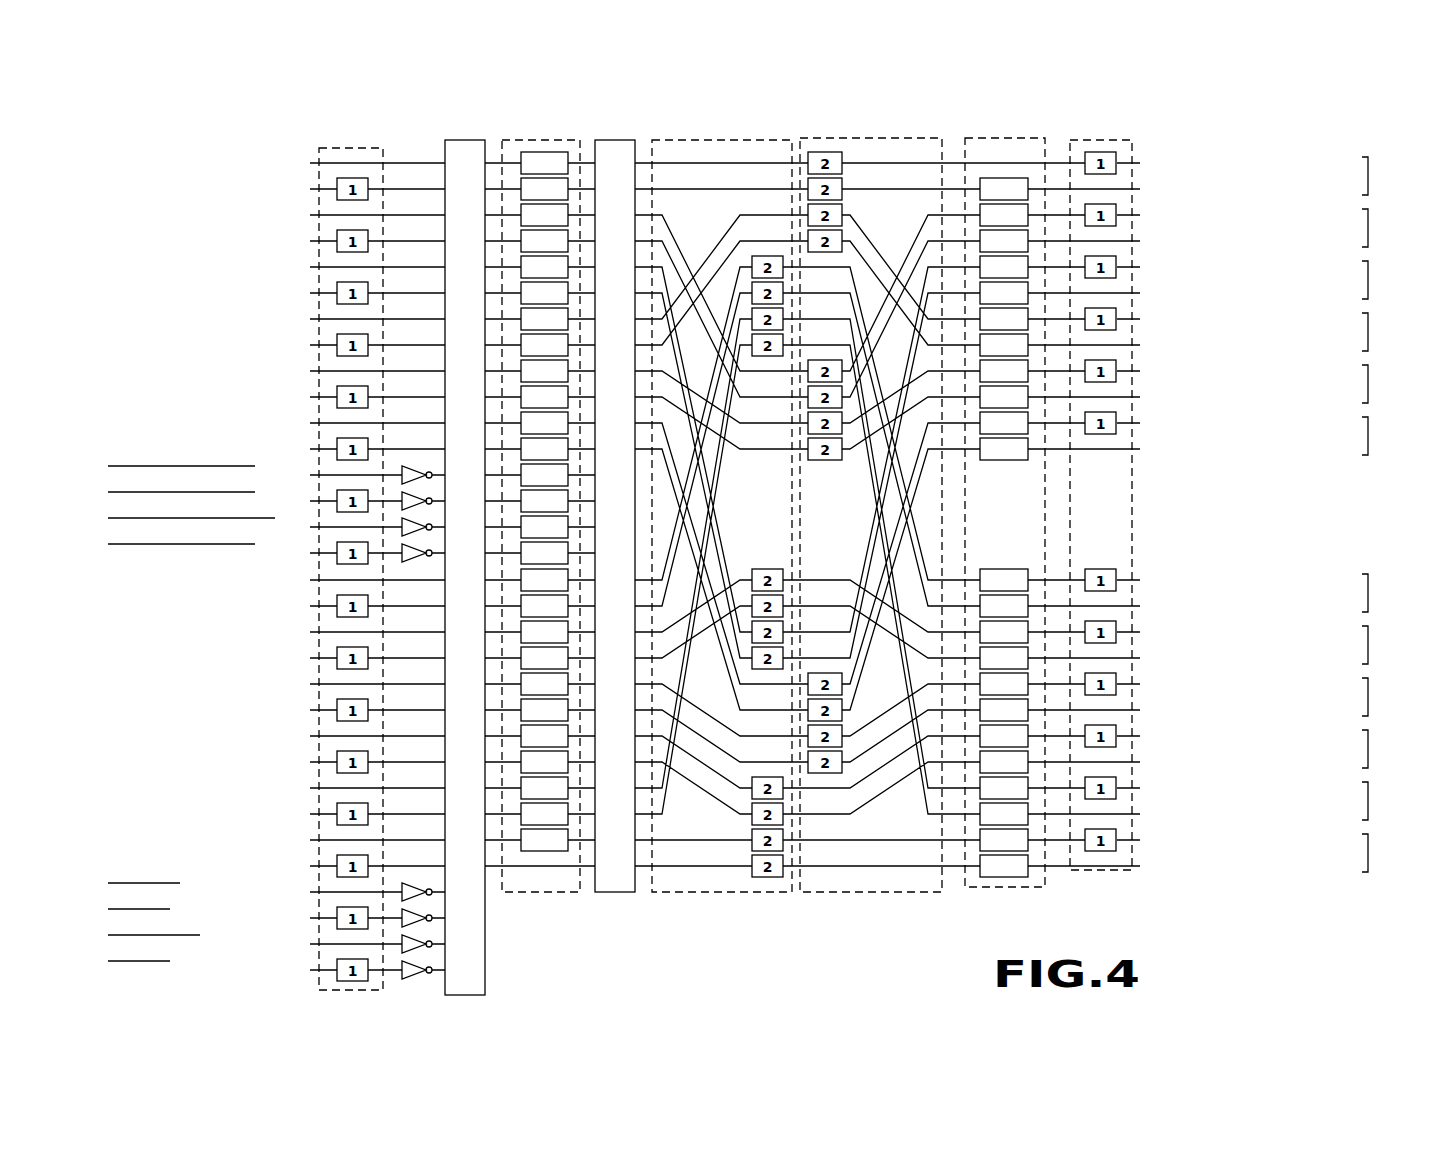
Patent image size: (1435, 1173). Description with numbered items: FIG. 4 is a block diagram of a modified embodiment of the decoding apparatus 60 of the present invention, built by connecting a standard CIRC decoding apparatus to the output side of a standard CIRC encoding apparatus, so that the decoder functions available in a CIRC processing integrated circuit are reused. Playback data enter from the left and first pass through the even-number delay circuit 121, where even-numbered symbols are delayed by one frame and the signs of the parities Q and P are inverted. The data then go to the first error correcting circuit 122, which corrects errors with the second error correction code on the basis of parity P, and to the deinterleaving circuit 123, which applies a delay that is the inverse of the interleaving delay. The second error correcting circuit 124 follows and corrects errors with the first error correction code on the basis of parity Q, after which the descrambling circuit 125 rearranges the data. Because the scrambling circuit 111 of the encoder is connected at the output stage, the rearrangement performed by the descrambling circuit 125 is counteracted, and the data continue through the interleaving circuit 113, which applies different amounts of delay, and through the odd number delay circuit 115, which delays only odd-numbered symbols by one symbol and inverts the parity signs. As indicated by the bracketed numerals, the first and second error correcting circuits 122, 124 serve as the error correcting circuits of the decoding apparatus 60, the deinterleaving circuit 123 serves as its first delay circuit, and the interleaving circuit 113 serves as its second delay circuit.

The decoding apparatus 60 is at (795, 928).
The even-number delay circuit 121 is at (319, 988).
The first error correcting circuit 122 is at (486, 965).
The deinterleaving circuit 123 is at (553, 892).
The second error correcting circuit 124 is at (614, 893).
The descrambling circuit 125 is at (733, 892).
The scrambling circuit 111 is at (862, 892).
The interleaving circuit 113 is at (963, 875).
The odd number delay circuit 115 is at (1090, 873).